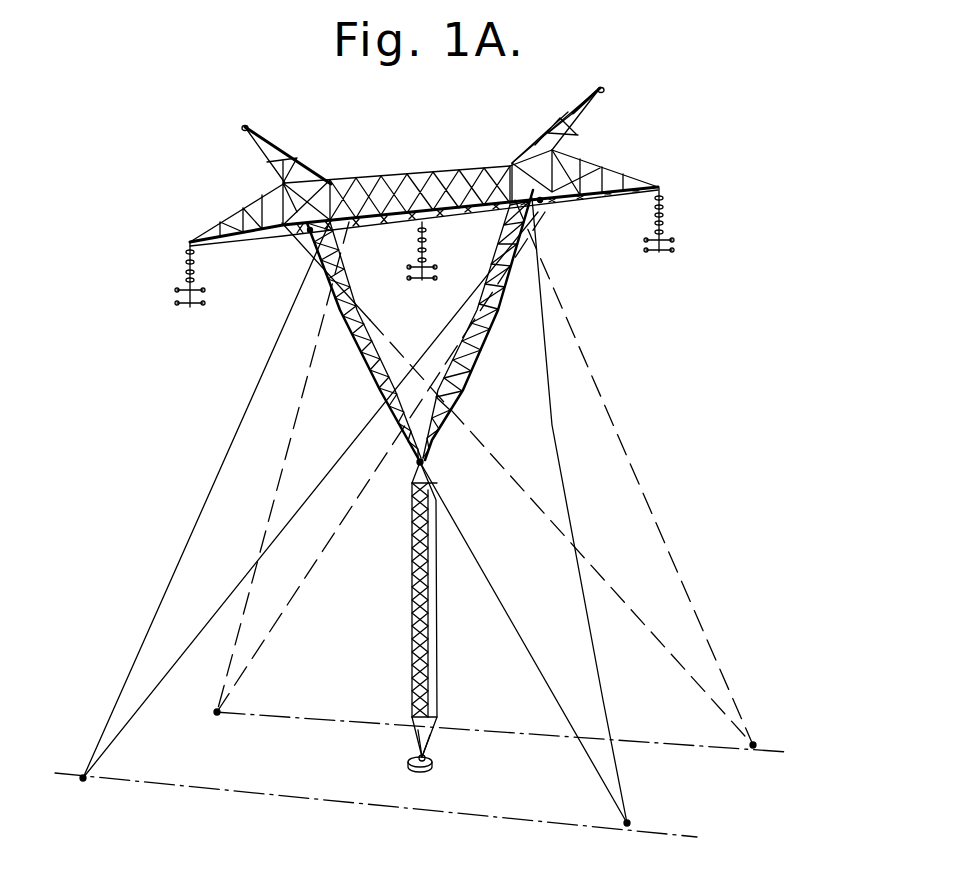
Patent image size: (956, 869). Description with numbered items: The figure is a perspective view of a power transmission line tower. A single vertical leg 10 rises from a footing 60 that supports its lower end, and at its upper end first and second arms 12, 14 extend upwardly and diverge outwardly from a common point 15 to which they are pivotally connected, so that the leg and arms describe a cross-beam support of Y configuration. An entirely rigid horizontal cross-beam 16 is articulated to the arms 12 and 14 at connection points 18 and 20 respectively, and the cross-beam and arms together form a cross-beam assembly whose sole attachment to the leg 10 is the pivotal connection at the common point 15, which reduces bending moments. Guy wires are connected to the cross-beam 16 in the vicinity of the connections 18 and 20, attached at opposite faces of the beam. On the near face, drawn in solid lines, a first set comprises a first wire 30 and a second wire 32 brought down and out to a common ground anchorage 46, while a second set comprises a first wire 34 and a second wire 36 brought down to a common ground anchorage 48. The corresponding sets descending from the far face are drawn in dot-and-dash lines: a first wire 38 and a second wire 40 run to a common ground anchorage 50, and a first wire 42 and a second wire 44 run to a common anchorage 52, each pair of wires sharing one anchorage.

The vertical leg 10 is at (425, 623).
The first arm 12 is at (470, 352).
The second arm 14 is at (365, 357).
The common point 15 is at (425, 462).
The cross-beam 16 is at (415, 170).
The connection point 18 is at (545, 207).
The connection point 20 is at (305, 234).
The first wire 30 is at (348, 447).
The second wire 32 is at (241, 424).
The first wire 34 is at (487, 573).
The second wire 36 is at (587, 612).
The first wire 38 is at (509, 474).
The second wire 40 is at (622, 442).
The first wire 42 is at (337, 540).
The second wire 44 is at (278, 470).
The ground anchorage 46 is at (83, 780).
The ground anchorage 48 is at (630, 822).
The ground anchorage 50 is at (756, 744).
The common anchorage 52 is at (217, 712).
The footing 60 is at (434, 761).